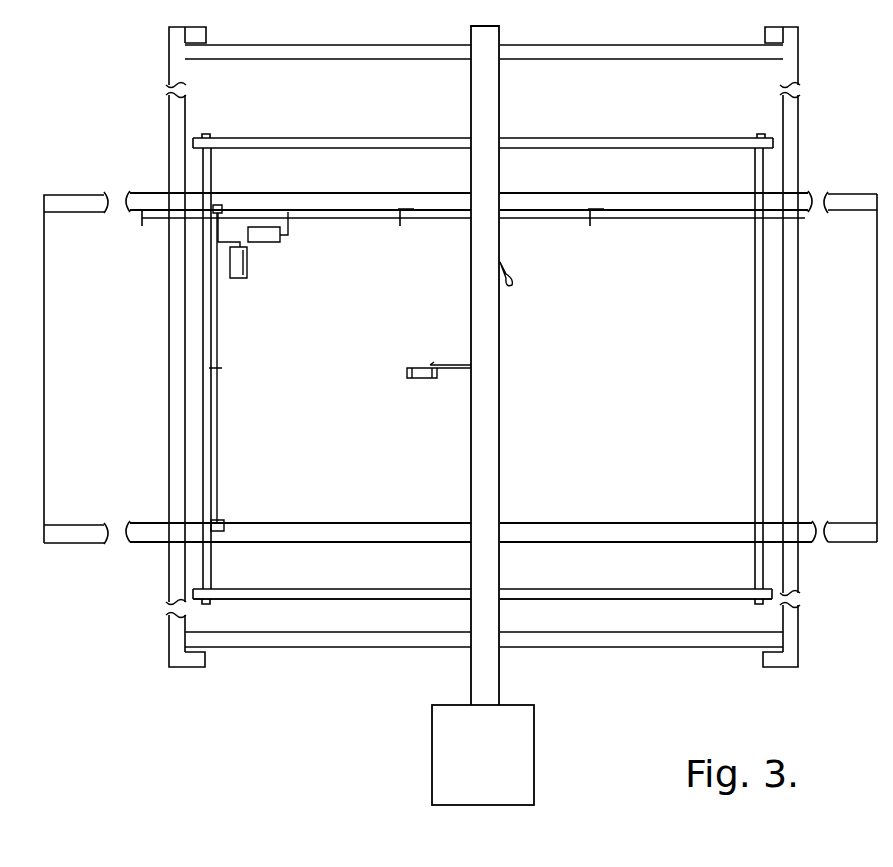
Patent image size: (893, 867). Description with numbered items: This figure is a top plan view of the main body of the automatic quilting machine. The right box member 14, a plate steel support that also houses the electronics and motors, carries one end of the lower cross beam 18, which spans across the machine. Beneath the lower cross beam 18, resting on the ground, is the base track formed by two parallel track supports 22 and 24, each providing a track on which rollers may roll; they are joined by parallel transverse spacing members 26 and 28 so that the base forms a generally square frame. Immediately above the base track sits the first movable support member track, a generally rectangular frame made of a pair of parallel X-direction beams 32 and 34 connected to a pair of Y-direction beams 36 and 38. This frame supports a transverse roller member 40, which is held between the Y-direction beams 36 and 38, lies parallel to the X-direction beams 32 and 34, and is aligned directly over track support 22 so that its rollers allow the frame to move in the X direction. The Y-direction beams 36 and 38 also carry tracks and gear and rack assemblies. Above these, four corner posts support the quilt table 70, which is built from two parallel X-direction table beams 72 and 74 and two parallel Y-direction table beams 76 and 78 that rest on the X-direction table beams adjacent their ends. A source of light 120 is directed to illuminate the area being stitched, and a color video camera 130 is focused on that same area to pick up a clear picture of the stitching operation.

The right box member 14 is at (490, 755).
The lower cross beam 18 is at (487, 450).
The track support 22 is at (177, 328).
The track support 24 is at (797, 370).
The transverse spacing member 26 is at (723, 642).
The transverse spacing member 28 is at (623, 52).
The X-direction beam 32 is at (44, 450).
The X-direction beam 34 is at (873, 438).
The Y-direction beam 36 is at (620, 199).
The Y-direction beam 38 is at (642, 533).
The transverse roller member 40 is at (217, 502).
The quilt table 70 is at (348, 605).
The X-direction table beam 72 is at (207, 439).
The X-direction table beam 74 is at (762, 512).
The Y-direction table beam 76 is at (575, 143).
The Y-direction table beam 78 is at (600, 593).
The source of light 120 is at (517, 273).
The color video camera 130 is at (427, 377).